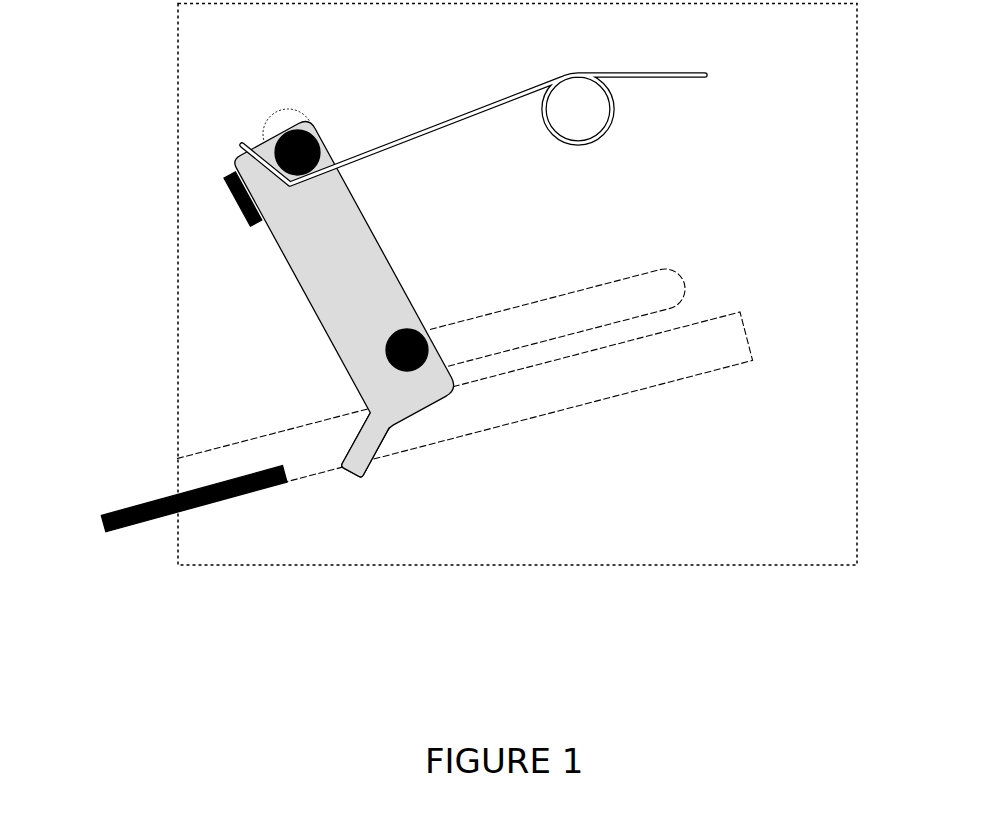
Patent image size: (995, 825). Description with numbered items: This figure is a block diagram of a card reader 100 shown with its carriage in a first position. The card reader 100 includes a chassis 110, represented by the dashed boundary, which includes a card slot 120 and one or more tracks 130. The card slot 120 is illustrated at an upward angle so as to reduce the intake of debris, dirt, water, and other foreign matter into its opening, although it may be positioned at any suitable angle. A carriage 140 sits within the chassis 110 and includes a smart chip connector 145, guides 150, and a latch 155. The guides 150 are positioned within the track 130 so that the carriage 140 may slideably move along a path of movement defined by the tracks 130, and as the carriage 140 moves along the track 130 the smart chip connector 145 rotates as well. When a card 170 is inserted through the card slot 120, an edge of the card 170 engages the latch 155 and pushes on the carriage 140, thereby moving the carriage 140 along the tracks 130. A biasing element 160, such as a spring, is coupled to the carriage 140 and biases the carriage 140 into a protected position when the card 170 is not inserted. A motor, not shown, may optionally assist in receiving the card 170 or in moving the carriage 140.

The card reader 100 is at (773, 669).
The chassis 110 is at (539, 548).
The card slot 120 is at (262, 447).
The track 130 is at (554, 274).
The carriage 140 is at (372, 197).
The smart chip connector 145 is at (220, 223).
The guides 150 is at (327, 130).
The latch 155 is at (390, 457).
The biasing element 160 is at (650, 56).
The card 170 is at (292, 494).